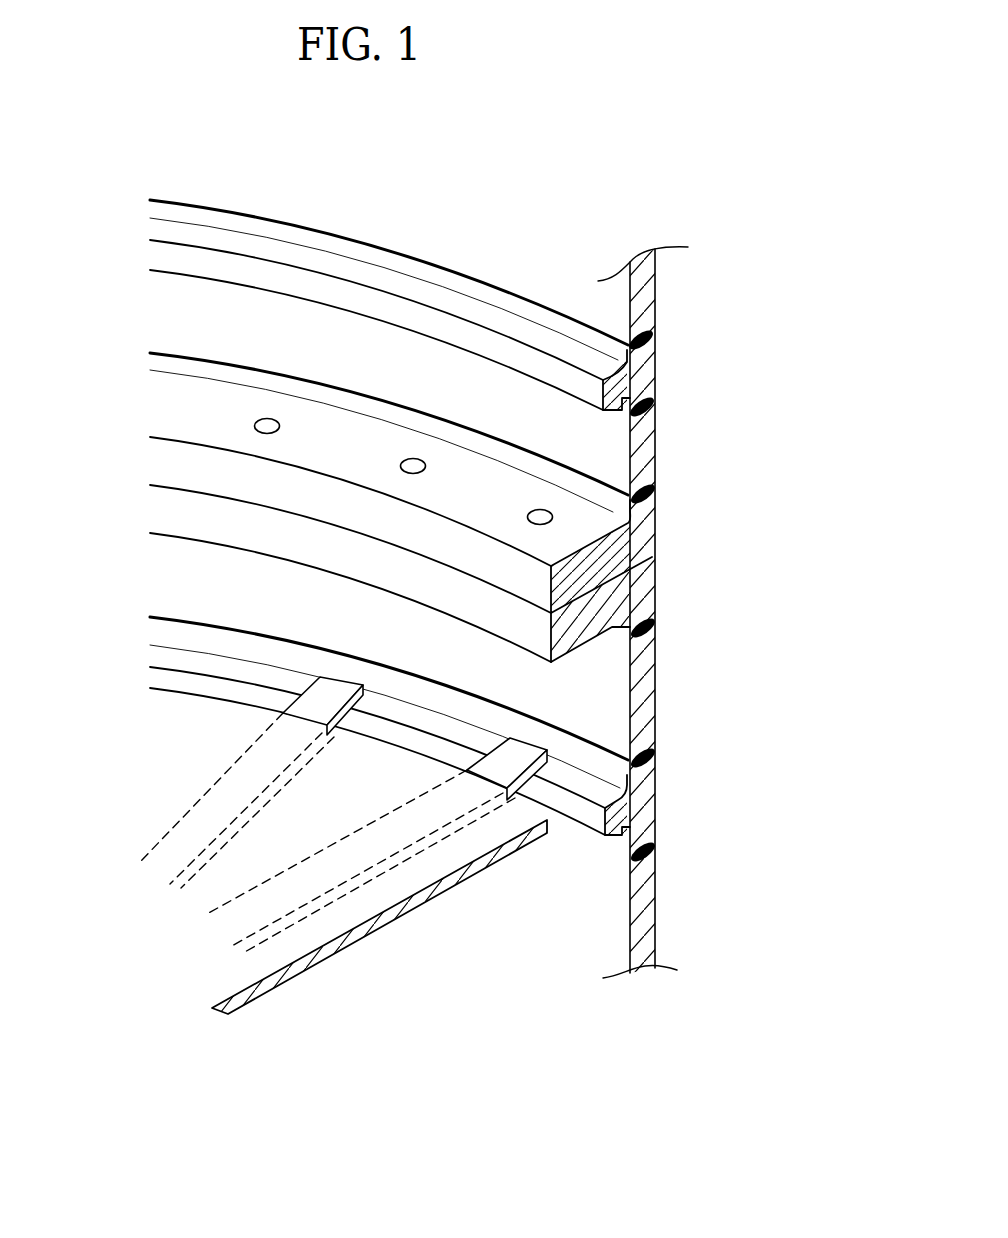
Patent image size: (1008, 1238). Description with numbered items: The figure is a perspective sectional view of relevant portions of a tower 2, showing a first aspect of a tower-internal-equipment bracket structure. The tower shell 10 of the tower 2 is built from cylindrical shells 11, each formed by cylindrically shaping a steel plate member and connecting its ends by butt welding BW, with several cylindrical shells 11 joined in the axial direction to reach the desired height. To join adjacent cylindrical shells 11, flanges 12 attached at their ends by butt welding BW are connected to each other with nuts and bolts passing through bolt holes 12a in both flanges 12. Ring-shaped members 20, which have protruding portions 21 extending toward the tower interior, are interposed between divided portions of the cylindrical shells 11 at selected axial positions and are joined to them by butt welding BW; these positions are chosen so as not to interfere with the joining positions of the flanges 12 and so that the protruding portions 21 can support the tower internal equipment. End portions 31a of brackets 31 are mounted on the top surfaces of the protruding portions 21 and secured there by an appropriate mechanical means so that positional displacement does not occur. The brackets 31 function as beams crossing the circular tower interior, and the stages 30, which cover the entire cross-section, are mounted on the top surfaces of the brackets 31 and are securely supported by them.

The tower 2 is at (787, 178).
The tower shell 10 is at (675, 702).
The cylindrical shell 11 is at (657, 284).
The flange 12 is at (165, 462).
The bolt hole 12a is at (266, 422).
The ring-shaped member 20 is at (675, 374).
The protruding portion 21 is at (403, 285).
The stage 30 is at (417, 875).
The bracket 31 is at (213, 802).
The end portion 31a is at (330, 690).
The butt welding BW is at (656, 338).